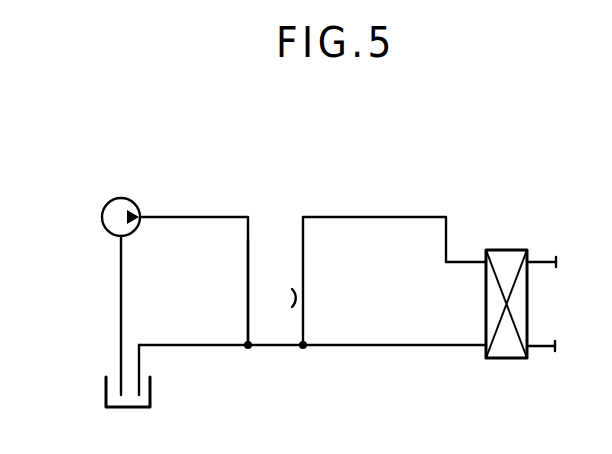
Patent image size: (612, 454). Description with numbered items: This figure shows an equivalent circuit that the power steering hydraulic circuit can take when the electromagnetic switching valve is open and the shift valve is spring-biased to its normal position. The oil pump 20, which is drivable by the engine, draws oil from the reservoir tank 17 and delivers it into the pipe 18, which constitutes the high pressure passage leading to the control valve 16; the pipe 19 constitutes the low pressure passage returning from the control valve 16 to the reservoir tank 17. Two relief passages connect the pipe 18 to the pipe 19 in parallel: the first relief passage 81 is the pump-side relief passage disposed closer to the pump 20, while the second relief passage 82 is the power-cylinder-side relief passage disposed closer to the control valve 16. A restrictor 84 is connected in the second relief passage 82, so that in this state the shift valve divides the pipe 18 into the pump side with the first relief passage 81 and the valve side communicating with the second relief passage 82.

The control valve 16 is at (515, 250).
The reservoir tank 17 is at (104, 390).
The pipe 18 is at (203, 217).
The pipe 19 is at (360, 348).
The oil pump 20 is at (108, 204).
The first relief passage 81 is at (247, 276).
The second relief passage 82 is at (304, 256).
The restrictor 84 is at (313, 297).